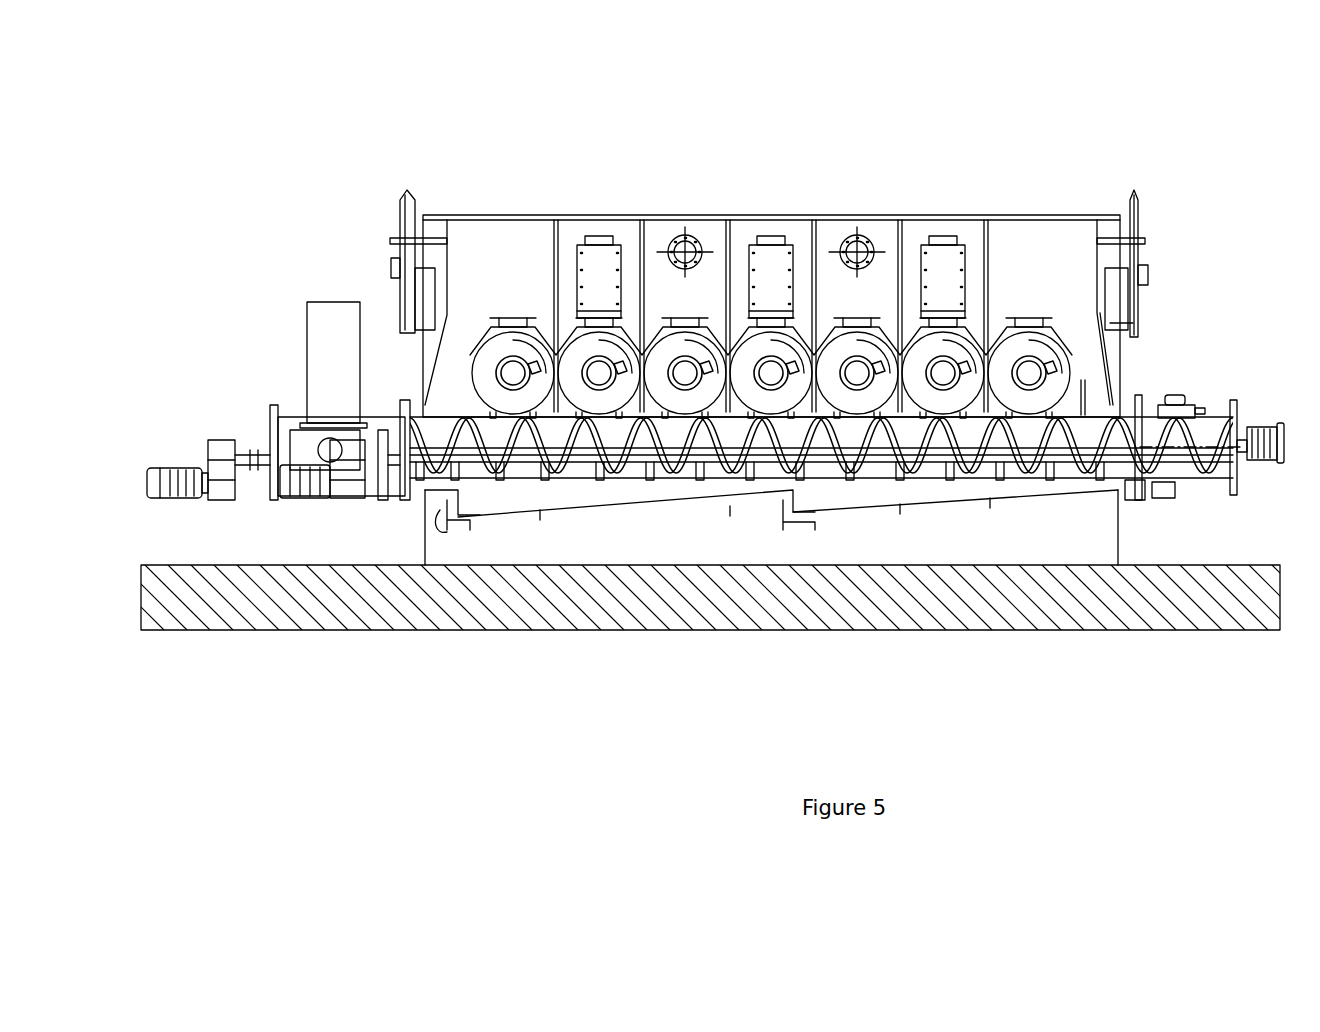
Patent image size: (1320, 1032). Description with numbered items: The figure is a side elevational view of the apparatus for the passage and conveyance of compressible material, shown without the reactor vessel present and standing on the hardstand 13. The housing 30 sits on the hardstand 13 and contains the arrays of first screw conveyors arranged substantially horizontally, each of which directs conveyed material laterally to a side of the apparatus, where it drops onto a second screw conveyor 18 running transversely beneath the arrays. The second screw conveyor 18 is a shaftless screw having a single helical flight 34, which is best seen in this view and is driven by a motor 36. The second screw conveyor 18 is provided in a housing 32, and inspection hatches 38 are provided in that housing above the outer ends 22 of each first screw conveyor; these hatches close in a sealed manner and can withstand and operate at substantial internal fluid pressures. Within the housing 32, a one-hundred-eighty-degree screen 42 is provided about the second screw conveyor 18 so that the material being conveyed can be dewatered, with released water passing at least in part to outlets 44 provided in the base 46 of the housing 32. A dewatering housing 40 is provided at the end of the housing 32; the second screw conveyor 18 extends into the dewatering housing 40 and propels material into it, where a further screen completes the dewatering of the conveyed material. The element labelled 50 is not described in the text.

The hardstand 13 is at (1172, 631).
The second screw conveyor 18 is at (399, 504).
The outer ends of first screw conveyors 22 is at (677, 343).
The housing 30 is at (1047, 215).
The housing 32 is at (1055, 503).
The helical flight 34 is at (428, 412).
The motor 36 is at (178, 460).
The inspection hatch 38 is at (508, 341).
The dewatering housing 40 is at (468, 352).
The 180° screen 42 is at (600, 480).
The outlet 44 is at (448, 520).
The base of housing 46 is at (578, 505).
The cutter hubs 50 is at (703, 352).